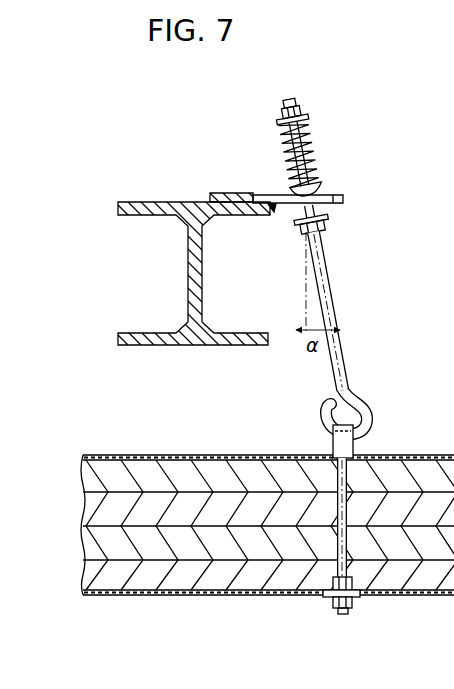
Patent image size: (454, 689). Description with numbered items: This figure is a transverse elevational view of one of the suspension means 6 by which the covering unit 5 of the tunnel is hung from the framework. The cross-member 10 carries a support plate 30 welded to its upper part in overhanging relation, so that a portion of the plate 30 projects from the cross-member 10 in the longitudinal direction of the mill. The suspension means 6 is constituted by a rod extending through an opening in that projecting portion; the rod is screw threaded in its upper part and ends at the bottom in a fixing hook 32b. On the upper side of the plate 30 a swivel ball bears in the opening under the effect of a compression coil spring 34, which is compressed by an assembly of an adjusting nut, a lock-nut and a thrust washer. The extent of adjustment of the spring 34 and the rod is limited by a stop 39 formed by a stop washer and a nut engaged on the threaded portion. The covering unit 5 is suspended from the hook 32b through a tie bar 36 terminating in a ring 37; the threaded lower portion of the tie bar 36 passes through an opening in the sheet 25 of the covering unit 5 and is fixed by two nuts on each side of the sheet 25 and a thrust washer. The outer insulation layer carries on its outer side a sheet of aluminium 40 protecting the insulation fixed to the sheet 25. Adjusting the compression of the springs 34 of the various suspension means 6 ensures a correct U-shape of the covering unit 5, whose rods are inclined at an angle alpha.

The cross-member 10 is at (147, 202).
The support plate 30 is at (242, 194).
The compression coil spring 34 is at (308, 135).
The stop 39 is at (326, 228).
The suspension means 6 is at (324, 368).
The fixing hook 32b is at (369, 411).
The ring 37 is at (357, 448).
The sheet of aluminium 40 is at (184, 456).
The covering unit 5 is at (267, 531).
The sheet 25 is at (441, 596).
The tie bar 36 is at (333, 549).